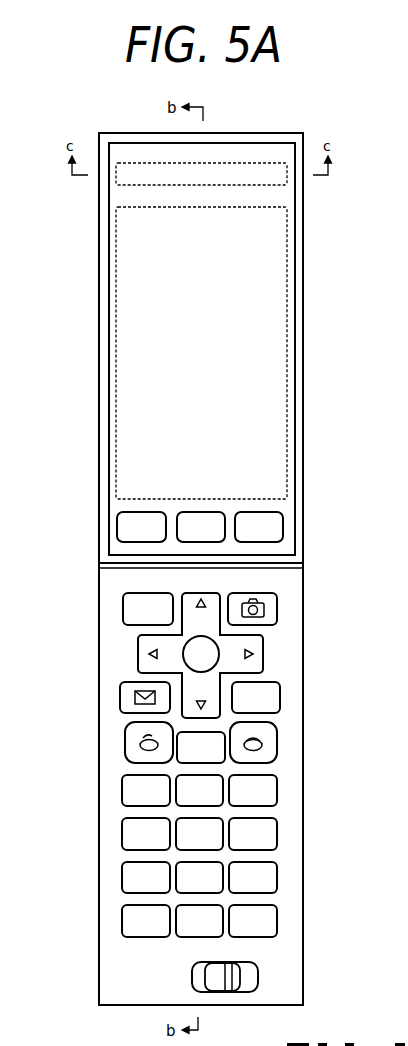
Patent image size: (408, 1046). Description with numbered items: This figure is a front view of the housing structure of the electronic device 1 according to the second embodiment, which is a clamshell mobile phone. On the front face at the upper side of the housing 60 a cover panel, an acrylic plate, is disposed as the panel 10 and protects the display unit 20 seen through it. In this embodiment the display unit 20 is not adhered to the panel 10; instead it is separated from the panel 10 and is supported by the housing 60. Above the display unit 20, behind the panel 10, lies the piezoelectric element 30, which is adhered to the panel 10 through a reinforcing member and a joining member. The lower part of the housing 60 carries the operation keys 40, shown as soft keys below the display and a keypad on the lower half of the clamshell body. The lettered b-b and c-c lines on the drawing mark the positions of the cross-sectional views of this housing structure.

The electronic device 1 is at (163, 129).
The panel 10 is at (220, 143).
The display unit 20 is at (287, 295).
The piezoelectric element 30 is at (287, 185).
The operation keys 40 is at (267, 527).
The housing 60 is at (99, 267).